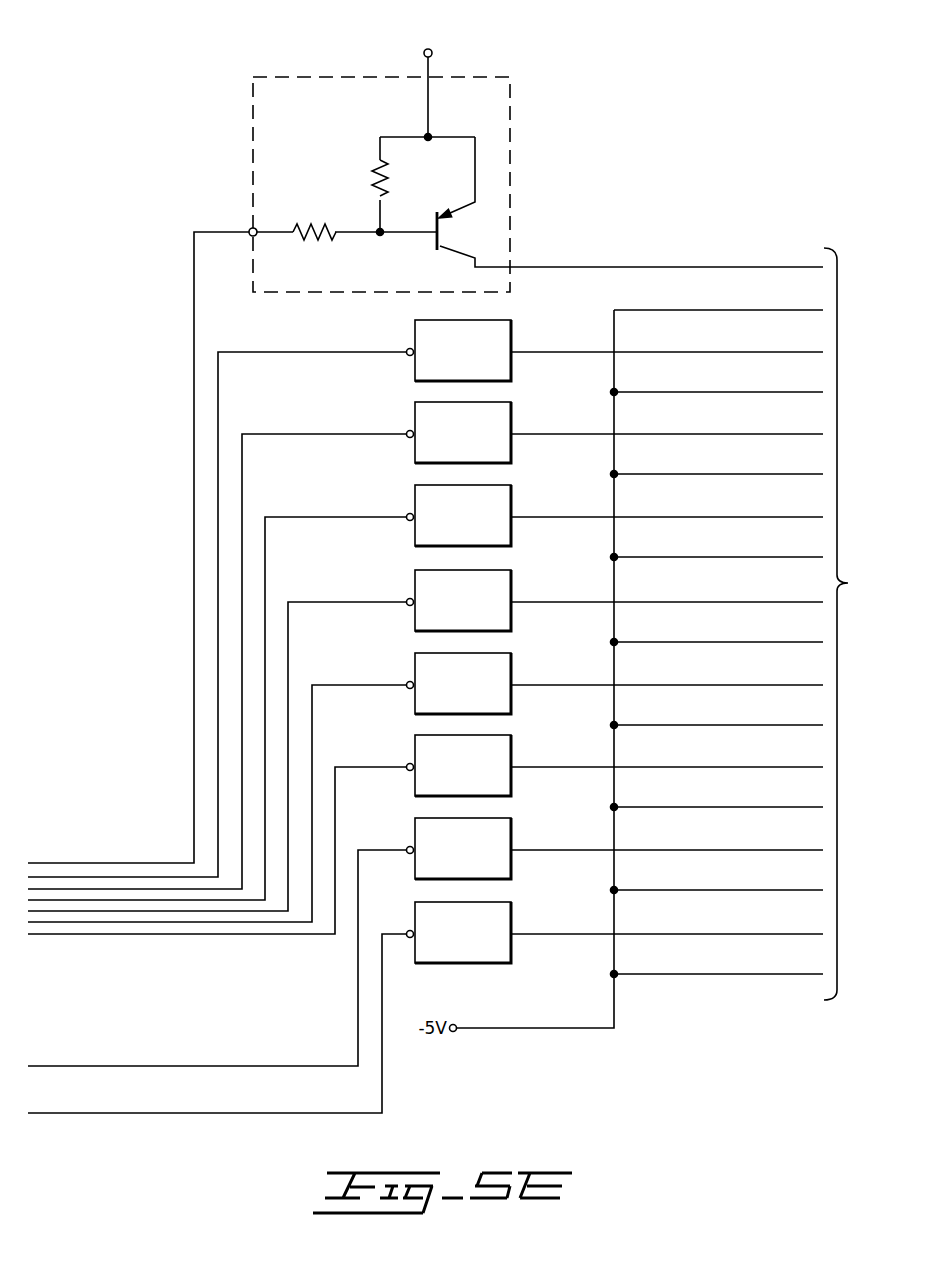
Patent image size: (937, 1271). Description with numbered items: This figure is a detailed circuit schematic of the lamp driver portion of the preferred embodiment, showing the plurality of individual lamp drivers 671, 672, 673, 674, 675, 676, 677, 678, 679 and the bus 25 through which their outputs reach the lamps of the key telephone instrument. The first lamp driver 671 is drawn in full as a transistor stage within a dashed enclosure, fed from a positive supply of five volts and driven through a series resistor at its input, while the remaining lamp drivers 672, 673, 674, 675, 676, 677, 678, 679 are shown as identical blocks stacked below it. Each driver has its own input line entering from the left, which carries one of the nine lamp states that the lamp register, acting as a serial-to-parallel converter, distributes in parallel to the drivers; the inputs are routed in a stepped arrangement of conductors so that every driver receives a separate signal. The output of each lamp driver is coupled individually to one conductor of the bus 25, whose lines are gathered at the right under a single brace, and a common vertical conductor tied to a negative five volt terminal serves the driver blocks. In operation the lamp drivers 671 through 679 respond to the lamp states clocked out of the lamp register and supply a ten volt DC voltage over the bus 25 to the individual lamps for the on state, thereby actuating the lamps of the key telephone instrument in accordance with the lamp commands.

The lamp driver 671 is at (516, 72).
The lamp driver 672 is at (501, 330).
The lamp driver 673 is at (501, 412).
The lamp driver 674 is at (501, 495).
The lamp driver 675 is at (501, 580).
The lamp driver 676 is at (501, 663).
The lamp driver 677 is at (501, 745).
The lamp driver 678 is at (501, 828).
The lamp driver 679 is at (501, 912).
The bus 25 is at (853, 624).